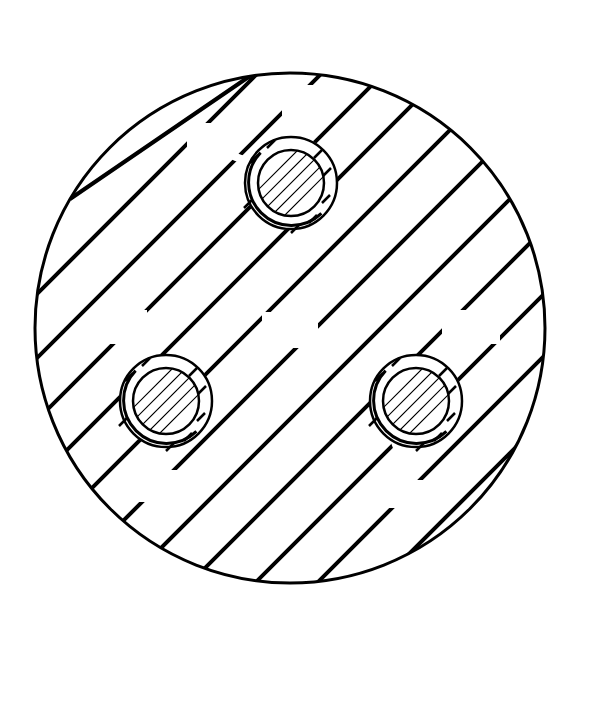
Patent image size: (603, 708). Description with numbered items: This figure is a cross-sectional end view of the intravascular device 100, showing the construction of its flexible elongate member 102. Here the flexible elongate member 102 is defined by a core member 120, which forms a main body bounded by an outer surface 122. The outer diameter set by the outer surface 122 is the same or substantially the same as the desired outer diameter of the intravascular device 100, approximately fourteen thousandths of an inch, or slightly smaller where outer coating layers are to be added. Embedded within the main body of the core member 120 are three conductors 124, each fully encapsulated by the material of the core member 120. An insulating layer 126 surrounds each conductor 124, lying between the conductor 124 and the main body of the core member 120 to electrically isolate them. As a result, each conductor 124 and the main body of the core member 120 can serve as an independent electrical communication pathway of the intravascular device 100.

The intravascular device 100 is at (144, 80).
The flexible elongate member 102 is at (402, 95).
The core member 120 is at (311, 344).
The outer surface 122 is at (147, 542).
The conductor 124 is at (288, 157).
The insulating layer 126 is at (252, 158).